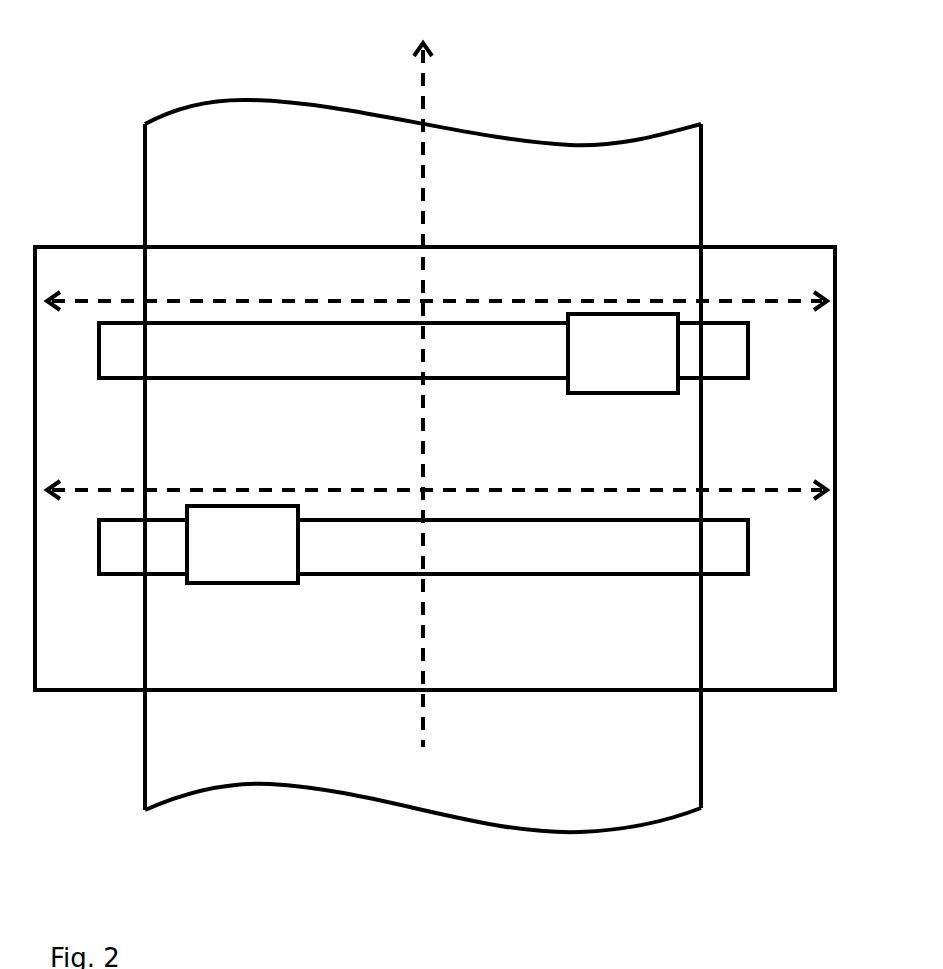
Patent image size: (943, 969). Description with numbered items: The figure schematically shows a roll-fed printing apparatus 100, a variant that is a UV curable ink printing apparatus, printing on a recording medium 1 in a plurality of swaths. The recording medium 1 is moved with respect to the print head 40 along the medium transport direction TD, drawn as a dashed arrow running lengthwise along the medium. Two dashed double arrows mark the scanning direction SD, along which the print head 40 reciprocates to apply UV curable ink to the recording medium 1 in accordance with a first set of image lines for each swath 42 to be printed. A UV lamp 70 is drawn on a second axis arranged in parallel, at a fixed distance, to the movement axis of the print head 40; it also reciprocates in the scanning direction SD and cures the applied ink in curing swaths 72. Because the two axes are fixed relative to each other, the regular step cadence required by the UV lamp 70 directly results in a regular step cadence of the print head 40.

The recording medium 1 is at (665, 770).
The roll-fed printing apparatus 100 is at (88, 265).
The curing swath 72 is at (535, 323).
The UV lamp 70 is at (626, 314).
The swath 42 is at (327, 583).
The print head 40 is at (215, 583).
The scanning direction SD is at (760, 297).
The medium transport direction TD is at (416, 86).